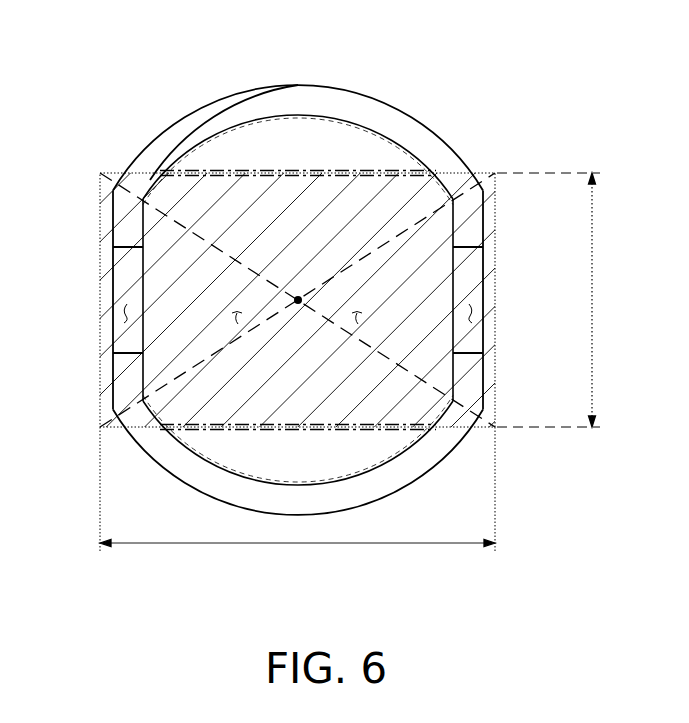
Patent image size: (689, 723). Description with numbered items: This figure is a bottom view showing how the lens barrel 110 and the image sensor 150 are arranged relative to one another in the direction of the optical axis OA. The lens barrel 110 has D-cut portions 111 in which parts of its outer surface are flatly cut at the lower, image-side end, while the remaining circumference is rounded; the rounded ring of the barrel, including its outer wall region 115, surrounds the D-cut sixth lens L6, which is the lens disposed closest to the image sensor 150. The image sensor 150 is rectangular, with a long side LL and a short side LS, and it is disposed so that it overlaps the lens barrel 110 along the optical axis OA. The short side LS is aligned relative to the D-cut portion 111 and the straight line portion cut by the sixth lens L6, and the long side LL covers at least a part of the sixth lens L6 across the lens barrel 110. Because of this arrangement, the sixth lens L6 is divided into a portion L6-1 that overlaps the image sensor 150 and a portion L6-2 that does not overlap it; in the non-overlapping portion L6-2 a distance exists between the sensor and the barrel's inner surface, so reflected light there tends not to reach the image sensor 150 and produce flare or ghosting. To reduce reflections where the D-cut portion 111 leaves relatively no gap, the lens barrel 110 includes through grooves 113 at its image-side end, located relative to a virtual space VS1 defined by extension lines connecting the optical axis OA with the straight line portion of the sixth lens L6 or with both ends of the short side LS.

The lens barrel 110 is at (421, 126).
The D-cut portion 111 is at (113, 232).
The through groove 113 is at (113, 321).
The rib of lens barrel 115 is at (237, 106).
The image sensor 150 is at (101, 409).
The sixth lens L6 is at (355, 147).
The portion overlapping the image sensor L6-1 is at (208, 197).
The portion not overlapping the image sensor L6-2 is at (298, 140).
The optical axis OA is at (296, 315).
The virtual space VS1 is at (357, 323).
The short side LS is at (564, 300).
The long side LL is at (297, 501).